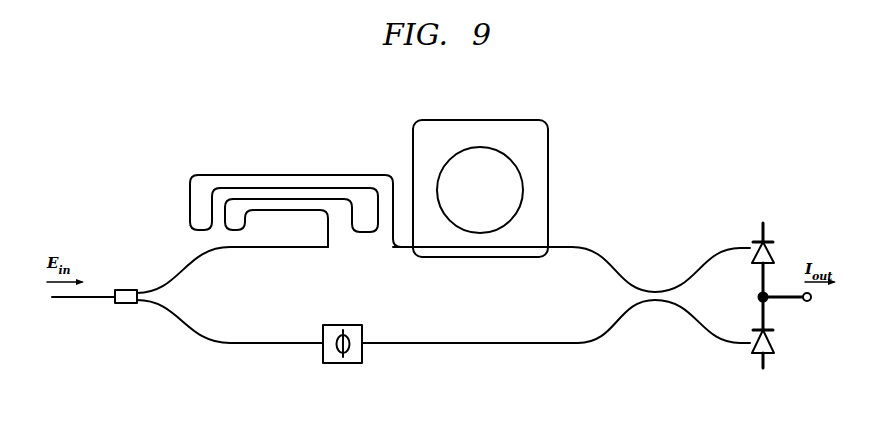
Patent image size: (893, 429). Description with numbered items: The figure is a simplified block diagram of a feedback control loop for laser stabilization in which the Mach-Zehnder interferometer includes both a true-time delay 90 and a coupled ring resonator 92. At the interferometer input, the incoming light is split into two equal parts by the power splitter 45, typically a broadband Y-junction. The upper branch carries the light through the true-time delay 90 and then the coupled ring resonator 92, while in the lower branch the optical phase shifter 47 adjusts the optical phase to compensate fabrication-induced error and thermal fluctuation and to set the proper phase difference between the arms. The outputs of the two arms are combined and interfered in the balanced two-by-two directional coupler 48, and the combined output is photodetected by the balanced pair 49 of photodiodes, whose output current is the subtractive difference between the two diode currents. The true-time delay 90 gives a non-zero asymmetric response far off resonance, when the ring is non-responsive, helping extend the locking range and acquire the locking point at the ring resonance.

The power splitter 45 is at (108, 304).
The optical phase shifter 47 is at (332, 364).
The balanced 2×2 directional coupler 48 is at (654, 321).
The balanced pair of photodiodes 49 is at (770, 228).
The true-time delay 90 is at (348, 175).
The coupled ring resonator 92 is at (549, 137).